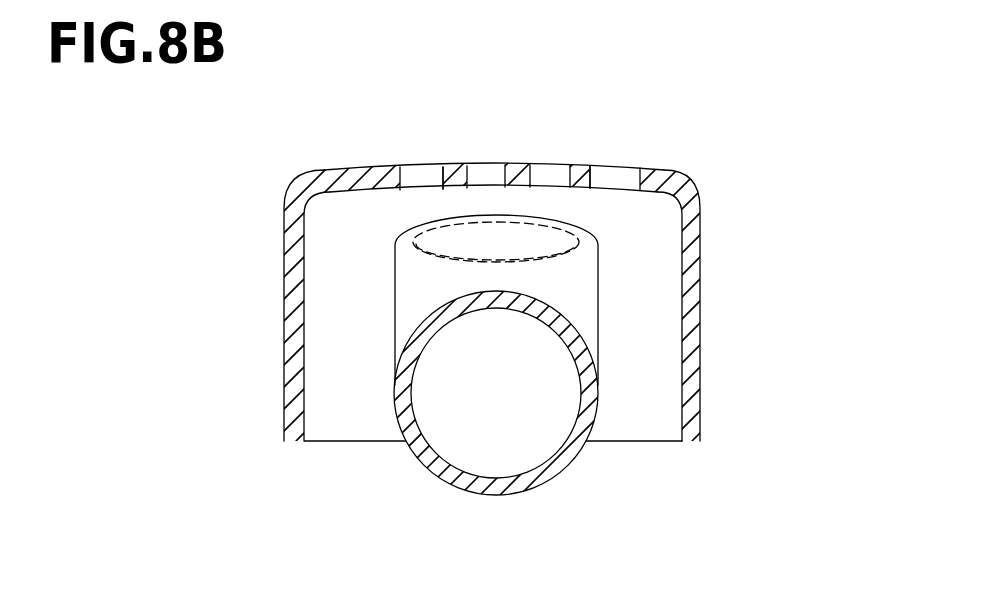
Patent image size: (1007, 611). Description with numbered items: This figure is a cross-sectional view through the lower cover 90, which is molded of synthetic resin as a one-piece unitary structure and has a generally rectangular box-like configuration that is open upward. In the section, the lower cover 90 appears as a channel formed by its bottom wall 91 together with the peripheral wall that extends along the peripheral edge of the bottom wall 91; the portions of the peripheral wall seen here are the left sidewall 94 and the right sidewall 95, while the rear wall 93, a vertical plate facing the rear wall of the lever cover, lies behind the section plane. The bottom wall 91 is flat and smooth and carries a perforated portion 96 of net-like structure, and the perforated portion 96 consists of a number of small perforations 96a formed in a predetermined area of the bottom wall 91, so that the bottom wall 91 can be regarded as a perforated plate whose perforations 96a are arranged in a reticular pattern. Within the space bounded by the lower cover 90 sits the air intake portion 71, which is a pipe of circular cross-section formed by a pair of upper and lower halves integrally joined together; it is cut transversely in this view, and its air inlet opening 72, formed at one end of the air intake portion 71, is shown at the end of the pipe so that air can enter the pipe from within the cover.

The lower cover 90 is at (493, 222).
The bottom wall 91 is at (362, 168).
The rear wall 93 is at (660, 383).
The left sidewall 94 is at (287, 320).
The right sidewall 95 is at (697, 318).
The perforated portion 96 is at (598, 53).
The perforations 96a is at (568, 172).
The air inlet opening 72 is at (560, 226).
The air intake portion 71 is at (577, 458).